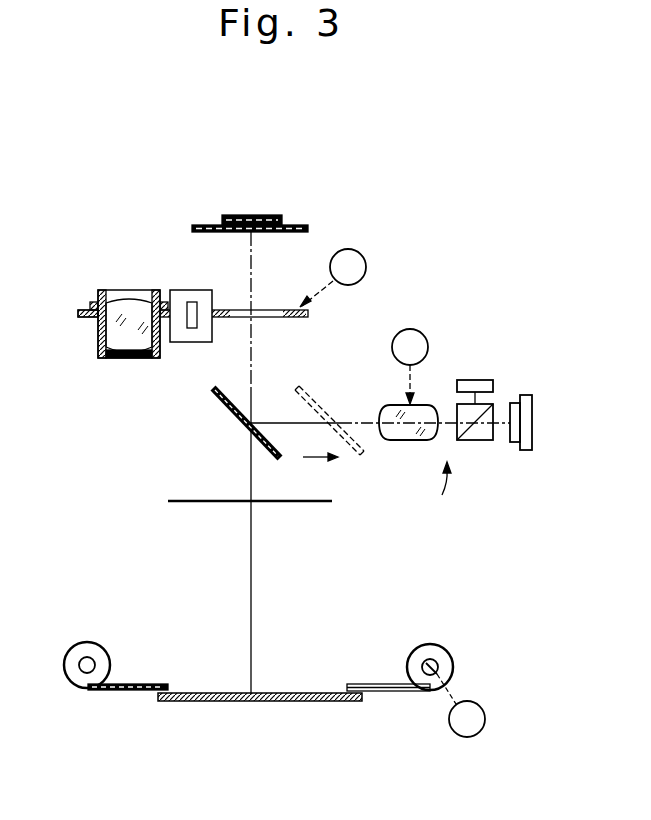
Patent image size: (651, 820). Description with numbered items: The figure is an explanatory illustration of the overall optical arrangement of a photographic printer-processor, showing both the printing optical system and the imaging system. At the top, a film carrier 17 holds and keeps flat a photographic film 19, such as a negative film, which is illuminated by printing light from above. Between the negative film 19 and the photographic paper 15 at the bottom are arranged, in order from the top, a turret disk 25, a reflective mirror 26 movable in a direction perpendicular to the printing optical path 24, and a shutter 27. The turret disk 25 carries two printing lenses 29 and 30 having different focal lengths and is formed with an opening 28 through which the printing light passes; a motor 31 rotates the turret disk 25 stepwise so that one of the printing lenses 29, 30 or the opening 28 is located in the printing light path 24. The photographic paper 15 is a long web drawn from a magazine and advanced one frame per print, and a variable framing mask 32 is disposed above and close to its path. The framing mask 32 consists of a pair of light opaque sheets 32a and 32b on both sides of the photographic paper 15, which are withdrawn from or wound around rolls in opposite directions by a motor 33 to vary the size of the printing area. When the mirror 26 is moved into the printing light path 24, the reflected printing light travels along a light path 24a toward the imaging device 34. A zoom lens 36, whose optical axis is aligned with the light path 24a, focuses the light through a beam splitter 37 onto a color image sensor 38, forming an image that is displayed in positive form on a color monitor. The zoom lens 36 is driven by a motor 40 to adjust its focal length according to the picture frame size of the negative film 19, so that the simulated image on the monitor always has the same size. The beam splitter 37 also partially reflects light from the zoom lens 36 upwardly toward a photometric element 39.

The photographic paper 15 is at (207, 702).
The film carrier 17 is at (200, 224).
The photographic film 19 is at (266, 215).
The printing optical path 24 is at (248, 532).
The light path 24a is at (280, 423).
The turret disk 25 is at (80, 314).
The reflective mirror 26 is at (228, 409).
The shutter 27 is at (315, 503).
The opening 28 is at (230, 308).
The printing lens 29 is at (127, 342).
The printing lens 30 is at (193, 343).
The motor 31 is at (367, 255).
The variable framing mask 32 is at (387, 704).
The light opaque sheet 32a is at (365, 684).
The light opaque sheet 32b is at (147, 684).
The motor 33 is at (467, 738).
The imaging device 34 is at (441, 493).
The zoom lens 36 is at (403, 441).
The beam splitter 37 is at (478, 441).
The color image sensor 38 is at (532, 424).
The photometric element 39 is at (488, 380).
The motor 40 is at (428, 334).